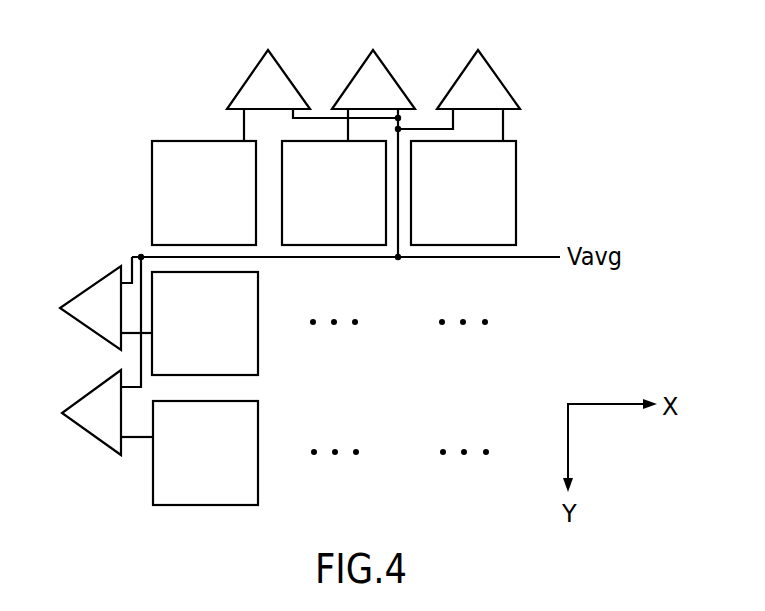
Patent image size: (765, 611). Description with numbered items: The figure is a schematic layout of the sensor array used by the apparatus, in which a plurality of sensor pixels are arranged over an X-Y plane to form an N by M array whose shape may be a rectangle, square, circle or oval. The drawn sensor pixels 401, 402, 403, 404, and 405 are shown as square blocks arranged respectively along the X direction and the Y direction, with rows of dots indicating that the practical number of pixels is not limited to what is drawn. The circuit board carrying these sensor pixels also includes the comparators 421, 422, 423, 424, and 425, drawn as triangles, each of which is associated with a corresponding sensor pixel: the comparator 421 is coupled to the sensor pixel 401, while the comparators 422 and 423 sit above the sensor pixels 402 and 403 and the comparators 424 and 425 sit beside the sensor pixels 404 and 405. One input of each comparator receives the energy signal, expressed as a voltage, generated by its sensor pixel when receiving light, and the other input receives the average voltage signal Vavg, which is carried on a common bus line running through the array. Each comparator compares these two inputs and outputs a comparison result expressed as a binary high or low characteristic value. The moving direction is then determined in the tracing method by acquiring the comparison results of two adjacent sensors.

The sensor pixel 401 is at (187, 148).
The sensor pixel 402 is at (333, 230).
The sensor pixel 403 is at (463, 230).
The sensor pixel 404 is at (247, 348).
The sensor pixel 405 is at (247, 478).
The comparator 421 is at (278, 83).
The comparator 422 is at (383, 83).
The comparator 423 is at (488, 83).
The comparator 424 is at (90, 298).
The comparator 425 is at (90, 402).